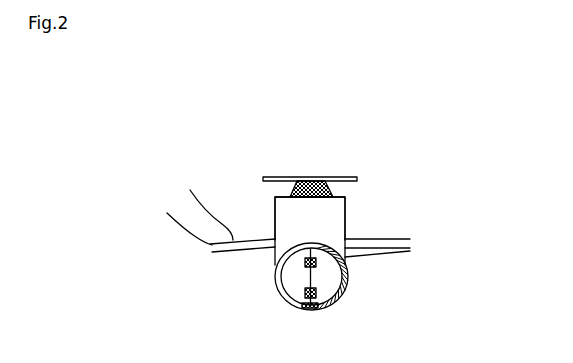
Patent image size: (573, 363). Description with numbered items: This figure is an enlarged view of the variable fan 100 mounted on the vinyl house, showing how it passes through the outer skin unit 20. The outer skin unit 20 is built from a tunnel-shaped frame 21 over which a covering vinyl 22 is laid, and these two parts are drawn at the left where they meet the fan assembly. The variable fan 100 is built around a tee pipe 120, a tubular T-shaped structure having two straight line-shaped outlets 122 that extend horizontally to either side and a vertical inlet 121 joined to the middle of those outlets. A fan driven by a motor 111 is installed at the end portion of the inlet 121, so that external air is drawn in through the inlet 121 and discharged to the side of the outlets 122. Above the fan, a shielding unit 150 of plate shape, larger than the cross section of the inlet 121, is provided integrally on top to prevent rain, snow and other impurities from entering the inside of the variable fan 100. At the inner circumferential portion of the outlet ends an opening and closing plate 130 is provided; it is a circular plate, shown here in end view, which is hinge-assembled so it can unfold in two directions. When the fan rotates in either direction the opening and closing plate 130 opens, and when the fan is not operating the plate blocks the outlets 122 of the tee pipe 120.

The outer skin unit 20 is at (180, 172).
The tunnel-shaped frame 21 is at (185, 223).
The covering vinyl 22 is at (207, 209).
The variable fan 100 is at (265, 220).
The motor 111 is at (333, 185).
The tee pipe 120 is at (447, 193).
The inlet 121 is at (325, 223).
The outlet 122 is at (348, 257).
The opening and closing plate 130 is at (346, 290).
The shielding unit 150 is at (350, 177).